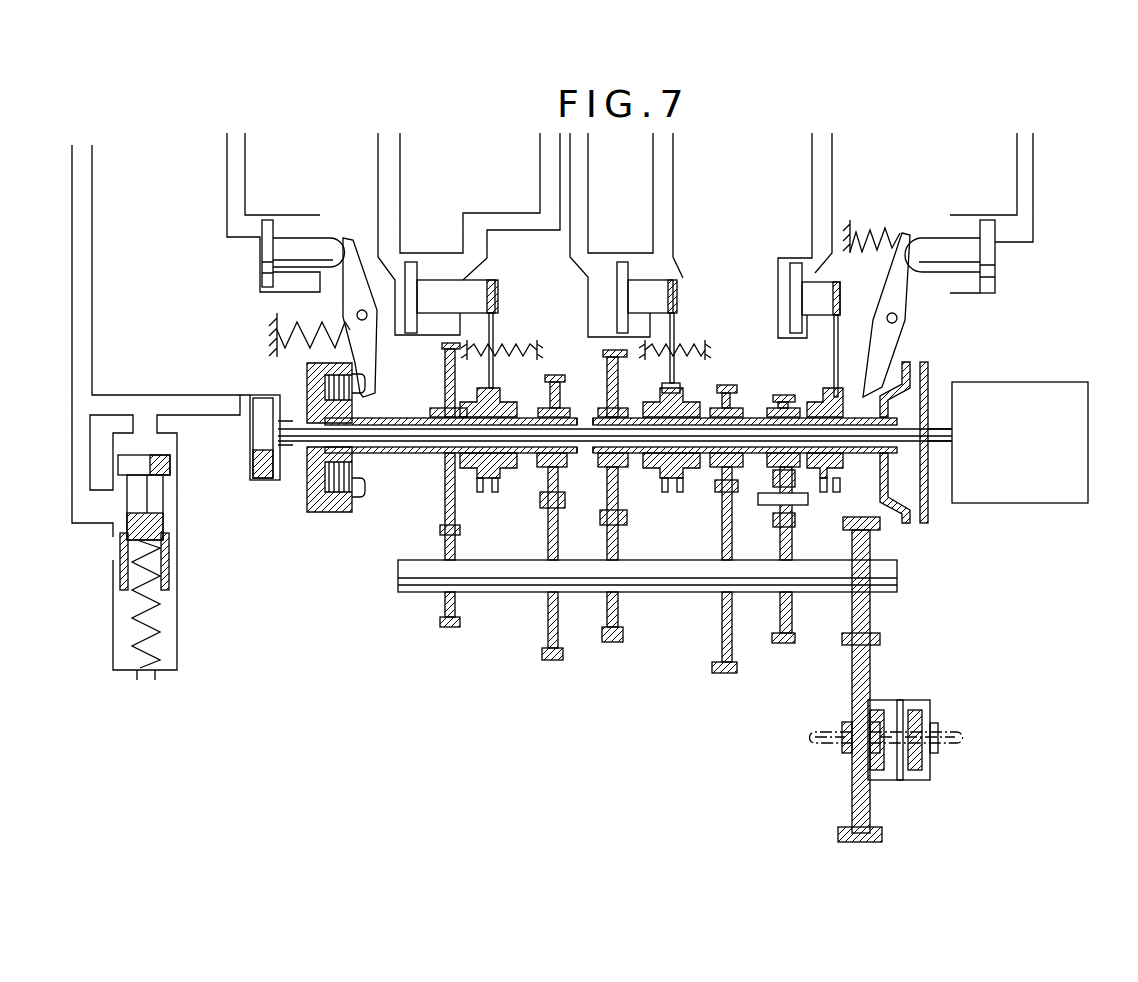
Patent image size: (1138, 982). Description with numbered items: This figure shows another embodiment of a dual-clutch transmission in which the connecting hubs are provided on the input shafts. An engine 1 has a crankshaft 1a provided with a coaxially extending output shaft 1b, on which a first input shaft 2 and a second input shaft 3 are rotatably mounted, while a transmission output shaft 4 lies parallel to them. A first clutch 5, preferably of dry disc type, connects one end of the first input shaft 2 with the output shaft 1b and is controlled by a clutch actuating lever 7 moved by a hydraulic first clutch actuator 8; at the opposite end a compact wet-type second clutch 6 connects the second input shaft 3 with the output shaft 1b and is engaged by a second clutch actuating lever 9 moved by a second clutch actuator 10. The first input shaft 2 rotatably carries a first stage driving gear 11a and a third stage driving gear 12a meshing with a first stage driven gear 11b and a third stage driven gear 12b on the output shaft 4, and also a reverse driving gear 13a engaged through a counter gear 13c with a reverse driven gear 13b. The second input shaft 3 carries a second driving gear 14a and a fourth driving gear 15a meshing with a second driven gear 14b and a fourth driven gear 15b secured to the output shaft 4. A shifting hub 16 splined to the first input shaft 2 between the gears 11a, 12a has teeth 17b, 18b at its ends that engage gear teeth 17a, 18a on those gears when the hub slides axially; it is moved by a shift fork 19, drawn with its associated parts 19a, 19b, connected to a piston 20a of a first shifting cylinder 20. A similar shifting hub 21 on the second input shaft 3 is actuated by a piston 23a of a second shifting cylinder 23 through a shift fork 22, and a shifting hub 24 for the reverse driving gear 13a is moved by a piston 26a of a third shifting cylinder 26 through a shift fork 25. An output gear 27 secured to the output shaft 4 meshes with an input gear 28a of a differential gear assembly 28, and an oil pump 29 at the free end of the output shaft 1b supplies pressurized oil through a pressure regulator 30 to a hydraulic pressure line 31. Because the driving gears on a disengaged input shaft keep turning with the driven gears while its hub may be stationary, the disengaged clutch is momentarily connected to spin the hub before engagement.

The engine 1 is at (1013, 486).
The crankshaft 1a is at (940, 450).
The output shaft 1b is at (585, 452).
The first input shaft 2 is at (757, 407).
The second input shaft 3 is at (412, 417).
The transmission output shaft 4 is at (518, 578).
The first clutch 5 is at (912, 518).
The second clutch 6 is at (366, 499).
The clutch actuating lever 7 is at (910, 305).
The first clutch actuator 8 is at (975, 212).
The second clutch actuating lever 9 is at (350, 312).
The second clutch actuator 10 is at (292, 212).
The first stage driving gear 11a is at (730, 390).
The first stage driven gear 11b is at (732, 535).
The third stage driving gear 12a is at (605, 368).
The third stage driven gear 12b is at (608, 528).
The reverse driving gear 13a is at (788, 395).
The reverse driven gear 13b is at (792, 547).
The counter gear 13c is at (795, 518).
The second driving gear 14a is at (562, 377).
The second driven gear 14b is at (558, 603).
The fourth driving gear 15a is at (445, 365).
The fourth driven gear 15b is at (455, 545).
The shifting hub 16 is at (683, 402).
The gear teeth 17a is at (680, 480).
The teeth 17b is at (716, 493).
The gear teeth 18a is at (560, 502).
The teeth 18b is at (621, 493).
The shift fork 19 is at (678, 308).
The spring 19a is at (700, 330).
The rod end 19b is at (658, 394).
The first shifting cylinder 20 is at (617, 250).
The piston 20a is at (675, 282).
The shifting hub 21 is at (502, 397).
The shift fork 22 is at (494, 322).
The second shifting cylinder 23 is at (430, 250).
The piston 23a is at (480, 285).
The shifting hub 24 is at (840, 480).
The shift fork 25 is at (845, 352).
The third shifting cylinder 26 is at (785, 252).
The piston 26a is at (840, 295).
The output gear 27 is at (868, 538).
The differential gear assembly 28 is at (906, 694).
The input gear 28a is at (872, 663).
The oil pump 29 is at (262, 478).
The pressure regulator 30 is at (178, 508).
The hydraulic pressure line 31 is at (95, 288).